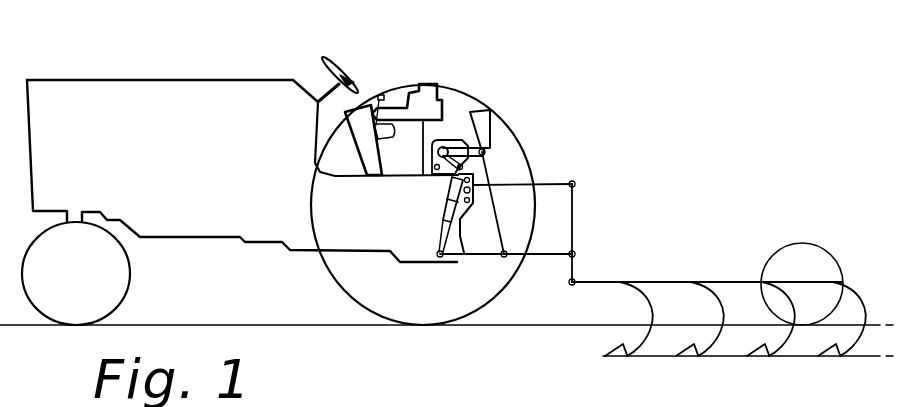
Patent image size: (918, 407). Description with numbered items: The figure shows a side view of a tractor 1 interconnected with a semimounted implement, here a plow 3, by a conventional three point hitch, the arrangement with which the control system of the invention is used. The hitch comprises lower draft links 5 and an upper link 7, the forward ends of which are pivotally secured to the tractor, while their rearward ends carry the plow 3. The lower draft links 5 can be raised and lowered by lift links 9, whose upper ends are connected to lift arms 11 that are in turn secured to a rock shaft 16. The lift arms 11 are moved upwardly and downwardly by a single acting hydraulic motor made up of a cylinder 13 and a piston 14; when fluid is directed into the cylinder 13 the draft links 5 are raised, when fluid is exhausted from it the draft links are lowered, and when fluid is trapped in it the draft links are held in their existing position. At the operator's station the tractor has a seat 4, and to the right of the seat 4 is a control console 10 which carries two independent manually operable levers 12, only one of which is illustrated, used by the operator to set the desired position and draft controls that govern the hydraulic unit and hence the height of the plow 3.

The tractor 1 is at (146, 80).
The plow 3 is at (711, 282).
The seat 4 is at (431, 83).
The lower draft links 5 is at (540, 258).
The upper link 7 is at (540, 183).
The lift links 9 is at (498, 222).
The control console 10 is at (373, 98).
The lift arms 11 is at (461, 146).
The manually operable levers 12 is at (385, 96).
The cylinder 13 is at (458, 188).
The piston 14 is at (446, 205).
The rock shaft 16 is at (445, 146).